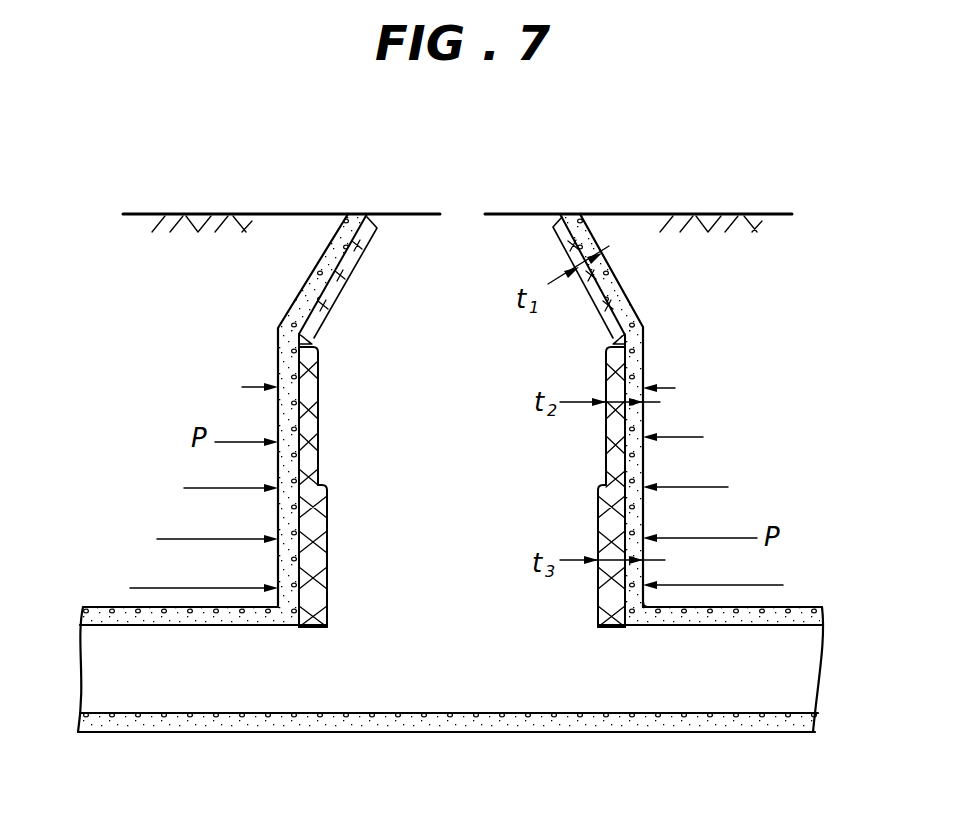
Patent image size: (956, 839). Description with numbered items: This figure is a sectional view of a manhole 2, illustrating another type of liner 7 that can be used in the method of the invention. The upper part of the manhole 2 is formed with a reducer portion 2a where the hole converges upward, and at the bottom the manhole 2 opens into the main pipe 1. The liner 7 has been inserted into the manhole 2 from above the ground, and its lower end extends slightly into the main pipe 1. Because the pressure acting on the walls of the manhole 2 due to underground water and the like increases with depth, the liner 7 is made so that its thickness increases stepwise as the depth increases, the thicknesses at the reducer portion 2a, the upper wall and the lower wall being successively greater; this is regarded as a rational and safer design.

The main pipe 1 is at (696, 722).
The manhole 2 is at (645, 354).
The reducer portion 2a is at (295, 301).
The liner 7 is at (612, 466).